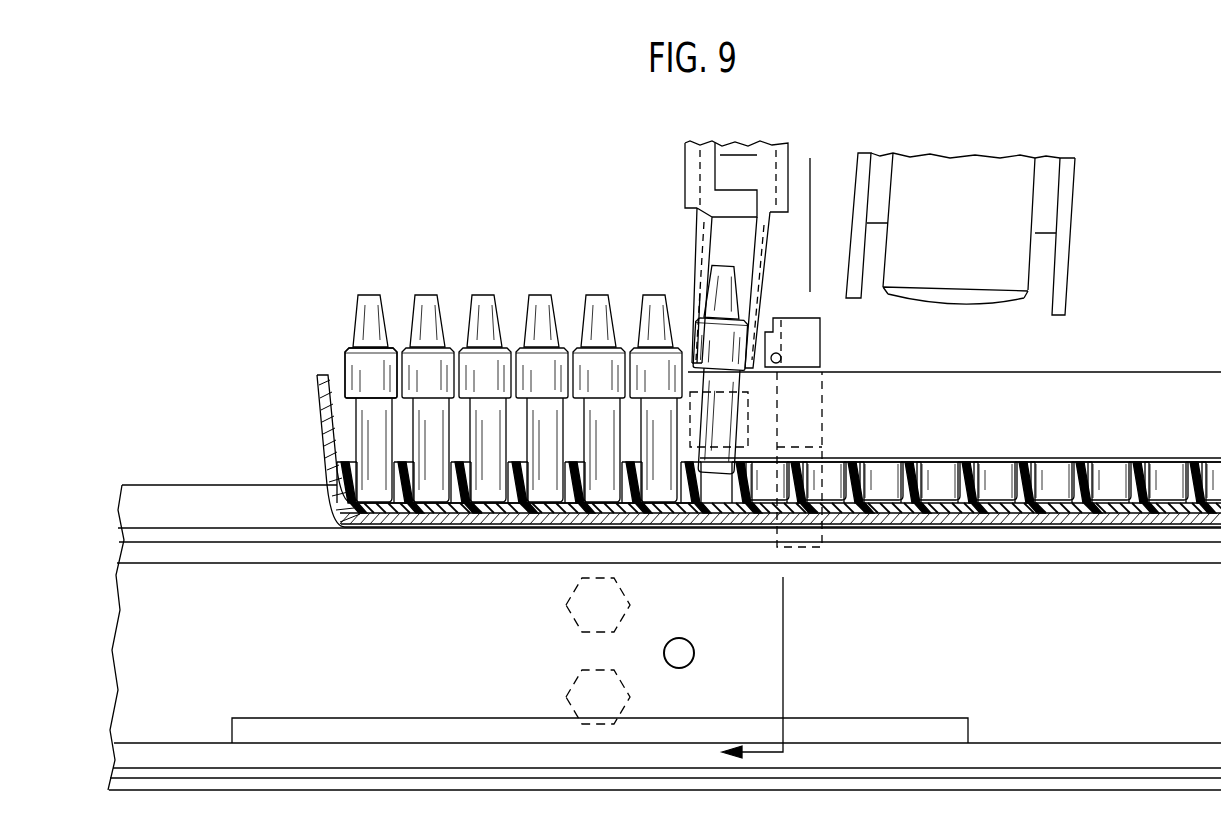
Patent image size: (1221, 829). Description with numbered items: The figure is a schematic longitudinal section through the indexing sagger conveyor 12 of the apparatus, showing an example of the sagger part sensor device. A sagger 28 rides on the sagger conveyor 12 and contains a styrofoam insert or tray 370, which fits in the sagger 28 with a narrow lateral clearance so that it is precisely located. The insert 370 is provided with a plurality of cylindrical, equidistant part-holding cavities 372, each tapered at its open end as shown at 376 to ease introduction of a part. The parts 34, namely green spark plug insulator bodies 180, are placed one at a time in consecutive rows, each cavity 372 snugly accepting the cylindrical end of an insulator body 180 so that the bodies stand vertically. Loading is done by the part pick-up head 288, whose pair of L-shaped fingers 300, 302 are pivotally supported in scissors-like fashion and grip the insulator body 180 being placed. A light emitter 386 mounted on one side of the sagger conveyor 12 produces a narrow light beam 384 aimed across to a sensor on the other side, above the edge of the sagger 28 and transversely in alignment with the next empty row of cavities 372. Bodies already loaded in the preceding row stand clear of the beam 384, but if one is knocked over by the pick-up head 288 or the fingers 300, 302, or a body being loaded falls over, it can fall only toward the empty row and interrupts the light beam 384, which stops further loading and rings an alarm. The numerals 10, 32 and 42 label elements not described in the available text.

The direction of movement 10 is at (790, 170).
The sagger conveyor 12 is at (372, 565).
The sagger 28 is at (318, 385).
The pusher 32 is at (1070, 280).
The part 34 is at (353, 345).
The gripper 42 is at (684, 189).
The spark plug insulator body 180 is at (352, 366).
The part pick-up head 288 is at (695, 208).
The L-shaped finger 300 is at (760, 262).
The L-shaped finger 302 is at (694, 271).
The styrofoam insert 370 is at (413, 518).
The part-holding cavity 372 is at (548, 500).
The tapered open end 376 is at (919, 462).
The light beam 384 is at (782, 355).
The light emitter 386 is at (783, 358).